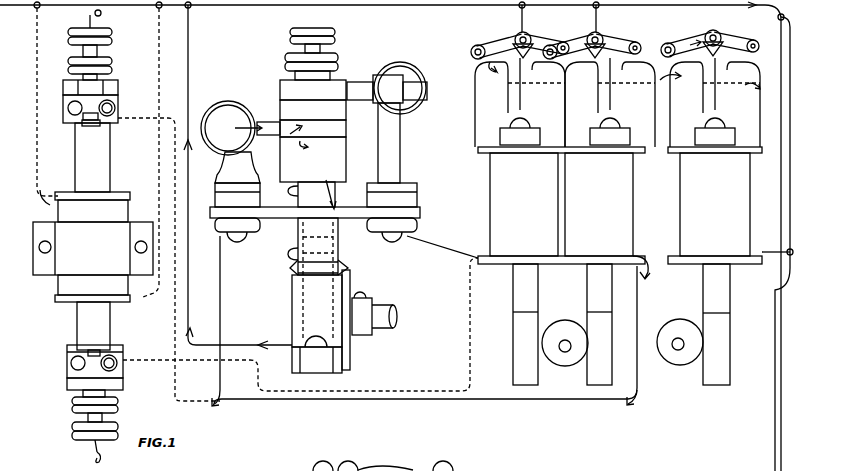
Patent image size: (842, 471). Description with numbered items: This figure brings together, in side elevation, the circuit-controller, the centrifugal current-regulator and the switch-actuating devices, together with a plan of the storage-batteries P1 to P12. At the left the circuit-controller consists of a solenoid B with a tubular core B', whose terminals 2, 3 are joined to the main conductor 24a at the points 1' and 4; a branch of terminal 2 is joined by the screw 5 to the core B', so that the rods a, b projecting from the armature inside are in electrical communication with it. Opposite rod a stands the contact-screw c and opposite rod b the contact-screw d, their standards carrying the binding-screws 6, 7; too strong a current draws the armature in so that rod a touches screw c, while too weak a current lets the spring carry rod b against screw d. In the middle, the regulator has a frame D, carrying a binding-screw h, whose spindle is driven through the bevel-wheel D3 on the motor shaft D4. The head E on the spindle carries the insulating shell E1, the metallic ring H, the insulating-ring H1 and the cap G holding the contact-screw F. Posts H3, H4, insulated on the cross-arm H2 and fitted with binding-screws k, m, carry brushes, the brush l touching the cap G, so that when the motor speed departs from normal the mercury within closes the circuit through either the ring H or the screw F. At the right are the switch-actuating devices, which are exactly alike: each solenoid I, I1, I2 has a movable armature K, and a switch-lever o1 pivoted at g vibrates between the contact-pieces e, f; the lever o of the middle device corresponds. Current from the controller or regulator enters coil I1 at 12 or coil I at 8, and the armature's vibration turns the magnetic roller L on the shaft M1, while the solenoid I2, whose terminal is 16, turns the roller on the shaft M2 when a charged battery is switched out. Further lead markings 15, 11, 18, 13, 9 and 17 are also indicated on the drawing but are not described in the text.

The connection point 1' is at (38, 99).
The connection point 4 is at (157, 8).
The conductor 18 is at (238, 175).
The main conductor 24a is at (262, 13).
The rod a is at (68, 119).
The contact-screw c is at (91, 109).
The binding-screw 6 is at (159, 250).
The tubular core B' is at (92, 236).
The screw 5 is at (70, 194).
The terminal 2 is at (46, 204).
The solenoid B is at (93, 247).
The terminal 3 is at (98, 301).
The rod b is at (62, 355).
The contact-screw d is at (95, 406).
The binding-screw 7 is at (289, 324).
The contact-screw F is at (330, 51).
The cap G is at (313, 90).
The insulating-ring H1 is at (313, 110).
The metallic ring H is at (313, 134).
The brush l is at (257, 129).
The hollow cylindrical shell E1 is at (313, 159).
The vertical post H3 is at (256, 162).
The head E is at (305, 168).
The frame D is at (315, 263).
The cross-arm H2 is at (346, 225).
The vertical post H4 is at (406, 155).
The binding-screw k is at (235, 243).
The binding-screw m is at (391, 245).
The motor shaft D4 is at (391, 301).
The bevel-wheel D3 is at (350, 358).
The binding-screw h is at (314, 322).
The conductor 15 is at (511, 17).
The conductor 11 is at (604, 17).
The pivot g is at (520, 34).
The switch-lever o1 is at (567, 33).
The contact-piece e is at (556, 44).
The lever o is at (613, 35).
The contact-piece f is at (664, 39).
The solenoid housing 13 is at (517, 116).
The solenoid housing 9 is at (656, 156).
The solenoid housing 17 is at (720, 114).
The coil I1 is at (561, 201).
The solenoid I is at (561, 208).
The solenoid I2 is at (729, 205).
The terminal 16 is at (760, 241).
The coil entry point 12 is at (449, 247).
The coil entry point 8 is at (638, 320).
The armature K is at (621, 324).
The shaft M1 is at (565, 343).
The roller L is at (621, 351).
The shaft M2 is at (680, 342).
The storage-battery P1 is at (363, 461).
The storage-battery P12 is at (456, 462).